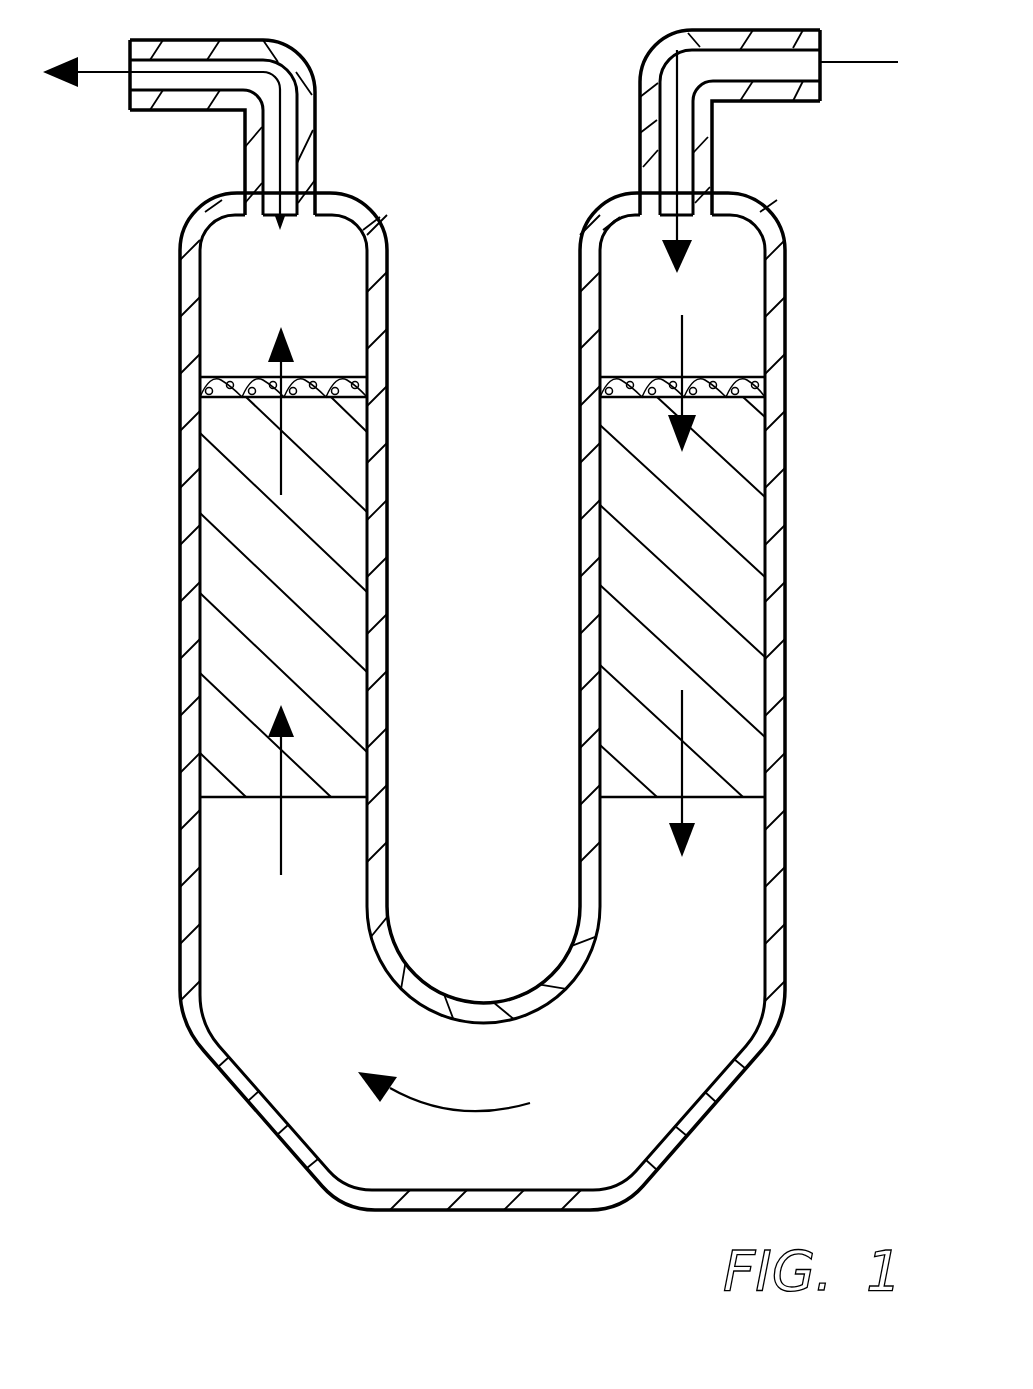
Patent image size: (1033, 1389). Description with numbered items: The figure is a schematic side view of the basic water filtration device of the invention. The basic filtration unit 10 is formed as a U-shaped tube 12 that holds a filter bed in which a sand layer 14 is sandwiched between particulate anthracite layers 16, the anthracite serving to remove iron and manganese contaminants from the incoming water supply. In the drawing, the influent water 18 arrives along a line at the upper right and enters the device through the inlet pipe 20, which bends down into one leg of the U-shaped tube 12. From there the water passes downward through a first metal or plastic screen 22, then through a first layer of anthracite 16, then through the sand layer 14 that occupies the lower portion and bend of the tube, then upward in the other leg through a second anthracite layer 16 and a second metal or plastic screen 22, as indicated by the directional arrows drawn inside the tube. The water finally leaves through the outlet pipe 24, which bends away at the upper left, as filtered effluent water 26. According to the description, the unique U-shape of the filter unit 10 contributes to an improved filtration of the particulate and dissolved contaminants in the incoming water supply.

The filtration unit 10 is at (487, 163).
The U-shaped tube 12 is at (388, 583).
The sand layer 14 is at (612, 972).
The anthracite layer 16 is at (222, 588).
The influent water 18 is at (876, 66).
The inlet pipe 20 is at (640, 128).
The screen 22 is at (674, 377).
The outlet pipe 24 is at (316, 147).
The effluent water 26 is at (118, 73).